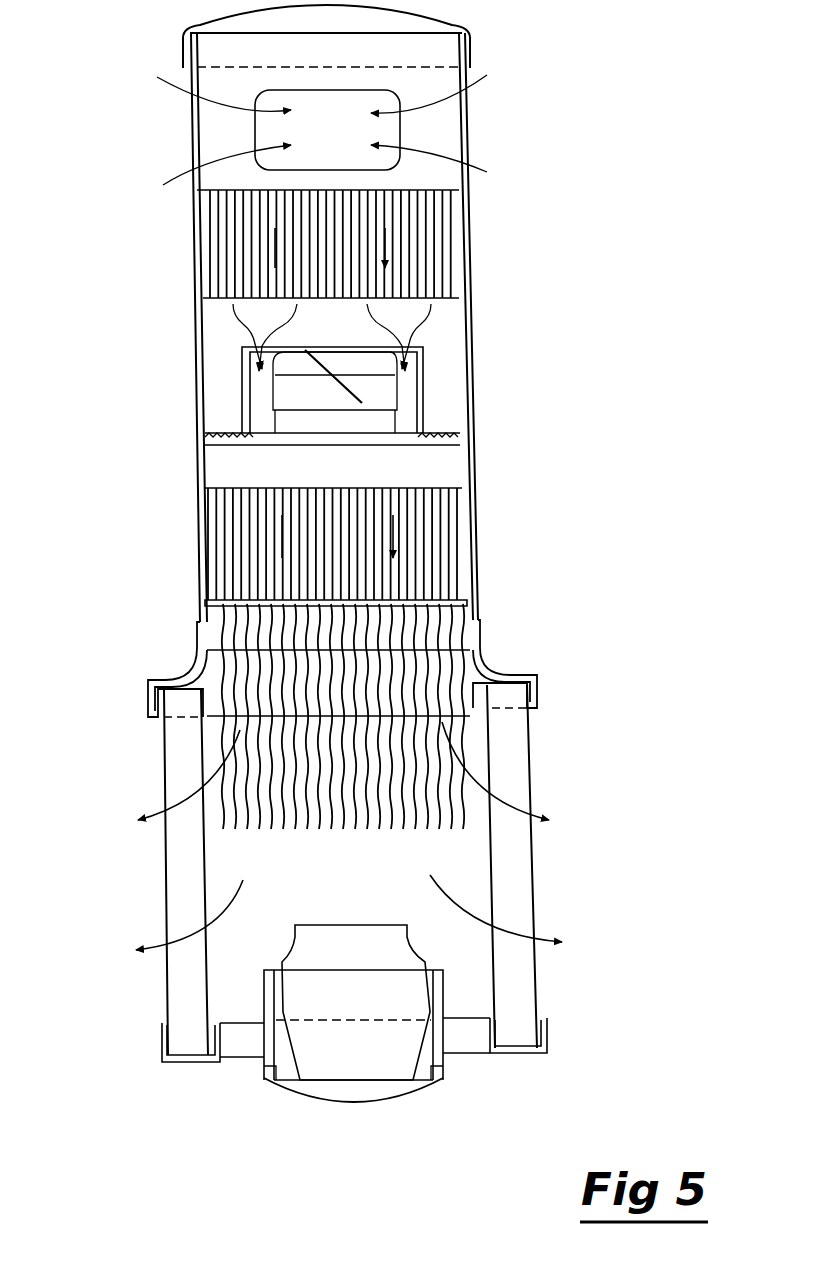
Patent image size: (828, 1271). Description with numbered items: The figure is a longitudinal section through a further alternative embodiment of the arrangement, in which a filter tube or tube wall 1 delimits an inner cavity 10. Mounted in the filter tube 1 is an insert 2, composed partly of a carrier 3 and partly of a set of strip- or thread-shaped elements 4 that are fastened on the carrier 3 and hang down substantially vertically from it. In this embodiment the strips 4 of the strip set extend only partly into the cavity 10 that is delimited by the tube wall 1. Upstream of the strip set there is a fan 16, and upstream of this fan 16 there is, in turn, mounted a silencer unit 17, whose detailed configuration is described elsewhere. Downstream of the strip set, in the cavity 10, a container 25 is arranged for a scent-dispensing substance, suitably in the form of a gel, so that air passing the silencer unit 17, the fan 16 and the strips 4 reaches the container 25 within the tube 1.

The filter tube 1 is at (532, 877).
The insert 2 is at (203, 603).
The carrier 3 is at (435, 558).
The strip- or thread-shaped elements 4 is at (288, 822).
The inner cavity 10 is at (220, 873).
The fan 16 is at (400, 390).
The silencer unit 17 is at (428, 257).
The container 25 is at (362, 938).